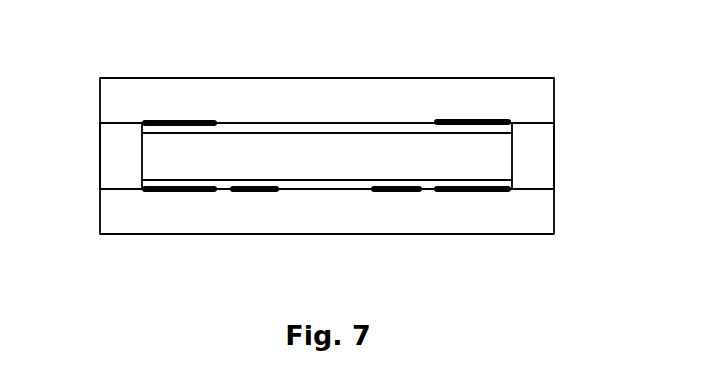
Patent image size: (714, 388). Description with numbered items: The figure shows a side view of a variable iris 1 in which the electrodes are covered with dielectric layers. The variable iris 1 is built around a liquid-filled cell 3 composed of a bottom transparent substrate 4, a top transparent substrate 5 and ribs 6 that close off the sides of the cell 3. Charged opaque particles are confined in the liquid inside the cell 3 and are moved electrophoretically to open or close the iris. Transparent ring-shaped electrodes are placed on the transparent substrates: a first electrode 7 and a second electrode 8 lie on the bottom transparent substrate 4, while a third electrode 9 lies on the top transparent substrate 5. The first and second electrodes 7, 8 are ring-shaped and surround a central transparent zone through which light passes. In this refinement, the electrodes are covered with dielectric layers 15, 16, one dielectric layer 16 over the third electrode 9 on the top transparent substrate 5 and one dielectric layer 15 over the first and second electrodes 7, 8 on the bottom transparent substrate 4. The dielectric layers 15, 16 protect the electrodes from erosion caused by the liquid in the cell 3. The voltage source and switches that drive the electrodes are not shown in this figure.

The variable iris 1 is at (185, 48).
The cell 3 is at (341, 140).
The bottom transparent substrate 4 is at (330, 234).
The top transparent substrate 5 is at (372, 77).
The ribs 6 is at (98, 162).
The first electrode 7 is at (182, 193).
The second electrode 8 is at (252, 193).
The third electrode 9 is at (162, 118).
The dielectric layer 15 is at (352, 185).
The dielectric layer 16 is at (287, 127).